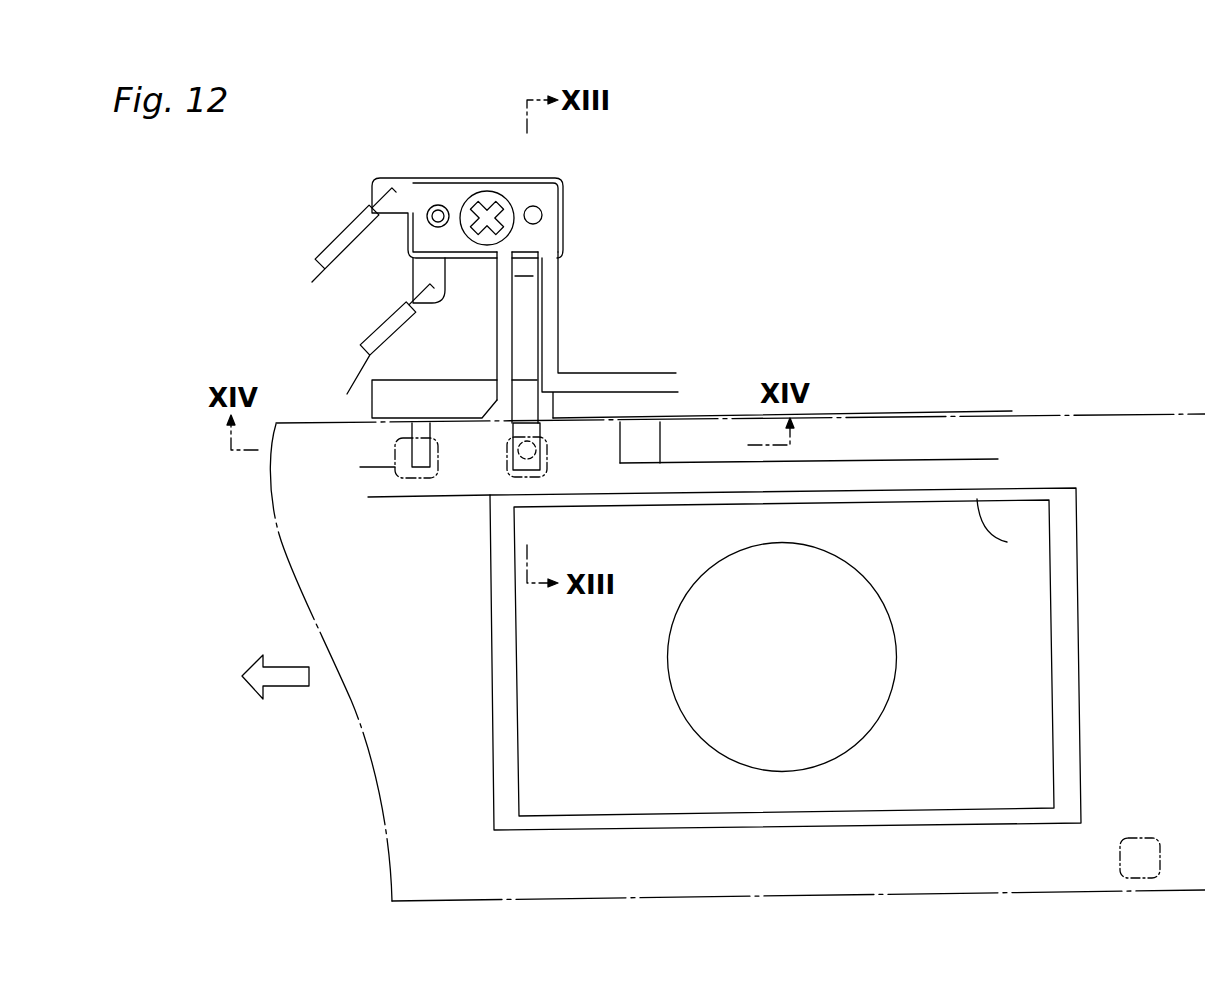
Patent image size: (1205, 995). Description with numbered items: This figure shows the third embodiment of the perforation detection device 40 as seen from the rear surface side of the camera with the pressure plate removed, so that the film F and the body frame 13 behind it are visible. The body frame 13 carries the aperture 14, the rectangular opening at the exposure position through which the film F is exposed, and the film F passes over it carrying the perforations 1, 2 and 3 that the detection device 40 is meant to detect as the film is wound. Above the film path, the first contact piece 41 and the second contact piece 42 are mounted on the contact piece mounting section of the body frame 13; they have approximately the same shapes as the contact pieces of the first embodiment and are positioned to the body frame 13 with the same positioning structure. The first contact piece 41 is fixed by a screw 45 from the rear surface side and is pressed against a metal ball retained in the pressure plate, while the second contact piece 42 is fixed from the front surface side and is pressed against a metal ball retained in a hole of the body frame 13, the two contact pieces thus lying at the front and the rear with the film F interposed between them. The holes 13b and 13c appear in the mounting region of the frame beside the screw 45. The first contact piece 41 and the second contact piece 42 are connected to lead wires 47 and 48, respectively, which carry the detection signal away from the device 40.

The perforation 1 is at (541, 478).
The perforation 2 is at (399, 503).
The perforation 3 is at (403, 480).
The body frame 13 is at (558, 340).
The hole 13b is at (537, 211).
The hole 13c is at (438, 206).
The aperture 14 is at (1007, 542).
The detection device 40 is at (484, 261).
The first contact piece 41 is at (540, 312).
The second contact piece 42 is at (412, 268).
The screw 45 is at (474, 192).
The lead wire 47 is at (336, 258).
The lead wire 48 is at (368, 346).
The film F is at (975, 411).